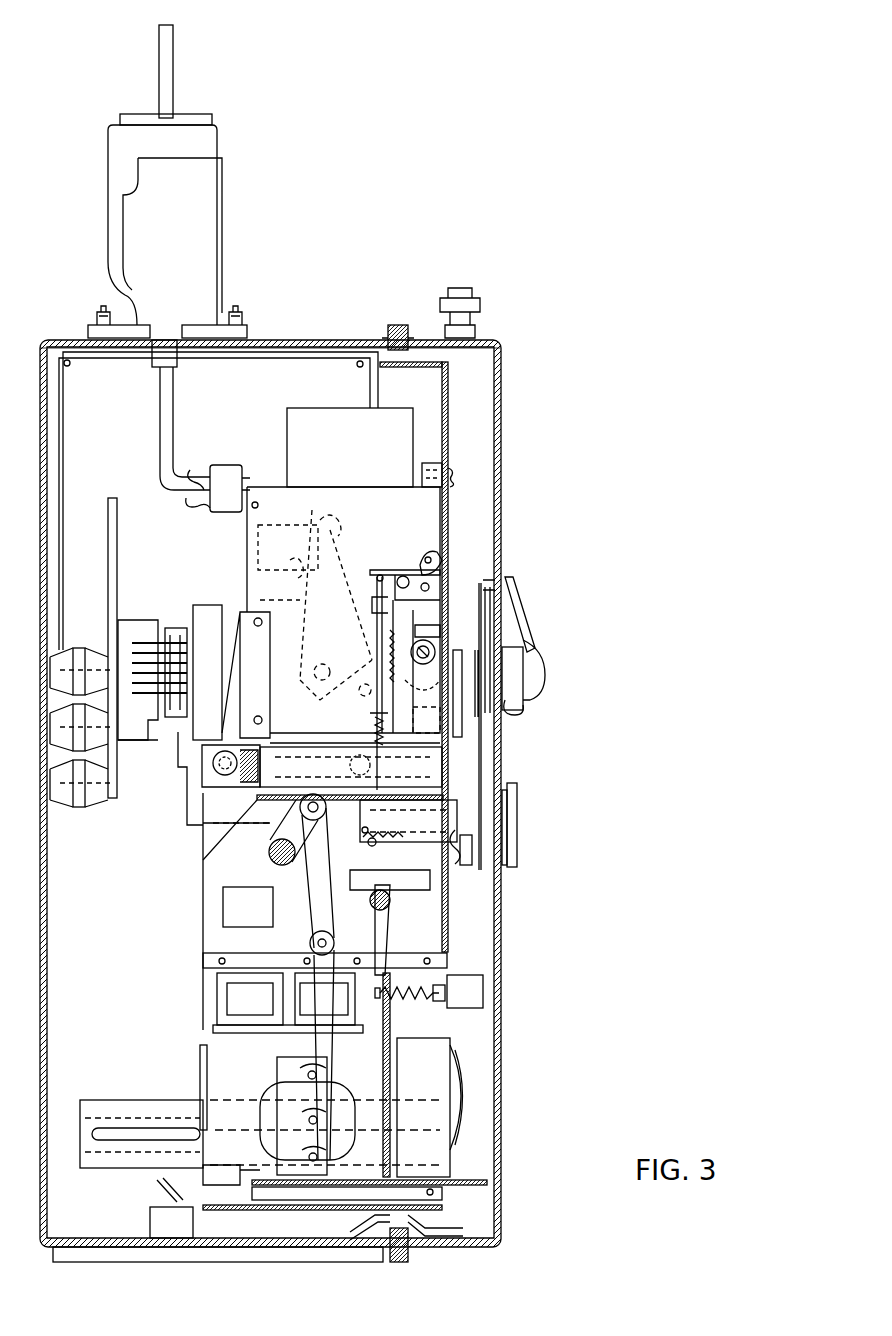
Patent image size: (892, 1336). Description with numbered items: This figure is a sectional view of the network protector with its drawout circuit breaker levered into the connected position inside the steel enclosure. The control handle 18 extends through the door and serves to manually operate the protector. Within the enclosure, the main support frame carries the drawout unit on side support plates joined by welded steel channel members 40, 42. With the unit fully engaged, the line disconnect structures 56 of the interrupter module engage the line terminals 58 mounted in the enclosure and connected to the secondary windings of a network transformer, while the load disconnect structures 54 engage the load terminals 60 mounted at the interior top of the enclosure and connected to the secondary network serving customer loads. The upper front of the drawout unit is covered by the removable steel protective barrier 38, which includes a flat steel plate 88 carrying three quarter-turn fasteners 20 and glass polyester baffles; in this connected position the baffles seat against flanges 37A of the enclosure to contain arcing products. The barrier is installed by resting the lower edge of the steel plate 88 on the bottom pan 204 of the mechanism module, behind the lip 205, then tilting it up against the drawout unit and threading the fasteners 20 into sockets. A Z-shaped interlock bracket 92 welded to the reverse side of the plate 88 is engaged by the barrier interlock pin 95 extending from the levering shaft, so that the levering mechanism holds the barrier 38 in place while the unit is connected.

The control handle 18 is at (512, 588).
The quarter-turn fasteners 20 is at (460, 480).
The flanges 37A is at (387, 340).
The protective barrier 38 is at (447, 418).
The channel member 40 is at (448, 765).
The channel member 42 is at (222, 780).
The load disconnect structures 54 is at (190, 473).
The line disconnect structures 56 is at (166, 628).
The line terminals 58 is at (133, 622).
The load terminals 60 is at (160, 412).
The steel plate 88 is at (455, 818).
The interlock bracket 92 is at (390, 630).
The barrier interlock pin 95 is at (435, 648).
The bottom pan 204 is at (203, 961).
The lip 205 is at (462, 975).